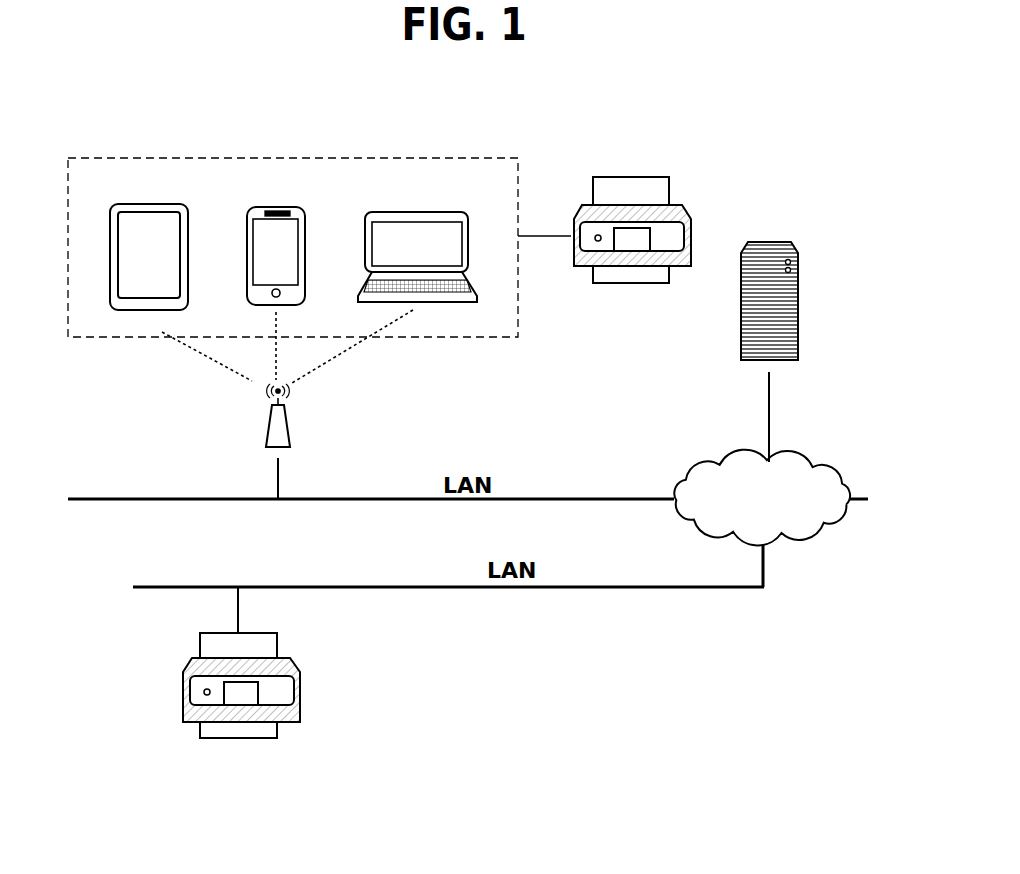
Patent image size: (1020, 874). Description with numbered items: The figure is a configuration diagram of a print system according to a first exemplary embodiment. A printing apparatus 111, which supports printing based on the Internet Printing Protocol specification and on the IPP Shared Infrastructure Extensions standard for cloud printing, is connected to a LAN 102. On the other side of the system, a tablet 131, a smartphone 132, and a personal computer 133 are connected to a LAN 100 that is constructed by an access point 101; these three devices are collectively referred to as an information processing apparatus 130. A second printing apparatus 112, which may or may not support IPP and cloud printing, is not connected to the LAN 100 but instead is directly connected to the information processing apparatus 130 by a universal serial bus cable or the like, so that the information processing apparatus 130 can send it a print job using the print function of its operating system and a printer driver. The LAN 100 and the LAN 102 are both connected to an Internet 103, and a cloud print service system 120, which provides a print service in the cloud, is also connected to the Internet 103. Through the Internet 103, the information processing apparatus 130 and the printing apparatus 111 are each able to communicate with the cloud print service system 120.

The LAN 100 is at (342, 352).
The access point 101 is at (290, 428).
The LAN 102 is at (338, 586).
The Internet 103 is at (808, 462).
The printing apparatus 111 is at (278, 655).
The printing apparatus 112 is at (677, 204).
The cloud print service system 120 is at (778, 241).
The information processing apparatus 130 is at (521, 176).
The tablet 131 is at (140, 203).
The smartphone 132 is at (270, 205).
The personal computer 133 is at (398, 212).